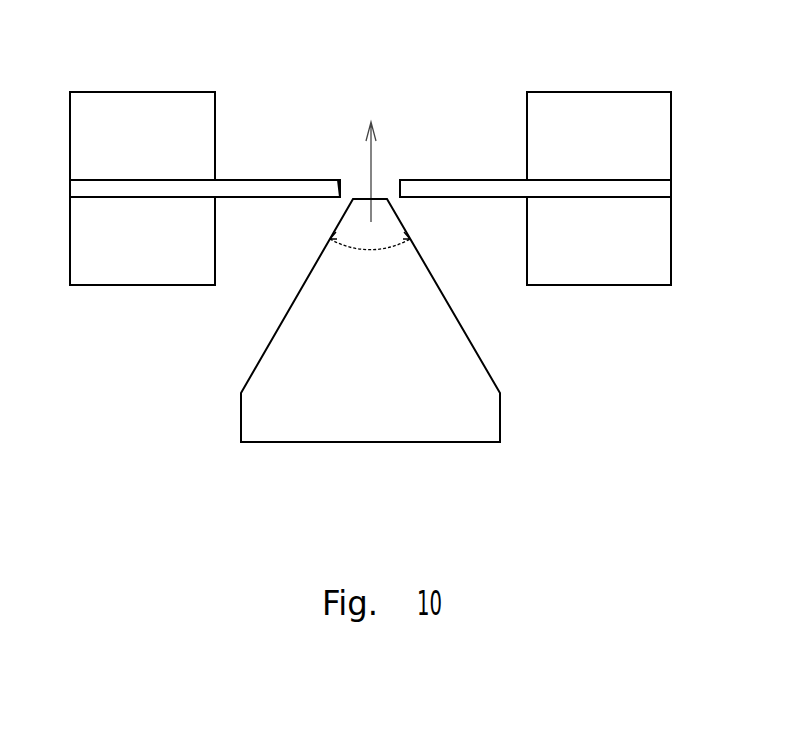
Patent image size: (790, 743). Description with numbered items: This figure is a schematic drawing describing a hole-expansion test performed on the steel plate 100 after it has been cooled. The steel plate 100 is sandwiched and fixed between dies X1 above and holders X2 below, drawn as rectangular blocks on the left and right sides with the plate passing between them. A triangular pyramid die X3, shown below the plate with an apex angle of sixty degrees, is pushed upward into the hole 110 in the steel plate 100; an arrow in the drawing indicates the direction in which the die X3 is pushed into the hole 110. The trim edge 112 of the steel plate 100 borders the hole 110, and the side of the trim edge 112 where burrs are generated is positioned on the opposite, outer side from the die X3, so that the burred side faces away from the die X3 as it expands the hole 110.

The die X1 is at (110, 92).
The holder X2 is at (107, 286).
The triangular pyramid die X3 is at (368, 443).
The steel plate 100 is at (273, 180).
The hole 110 is at (392, 151).
The trim edge 112 is at (398, 189).